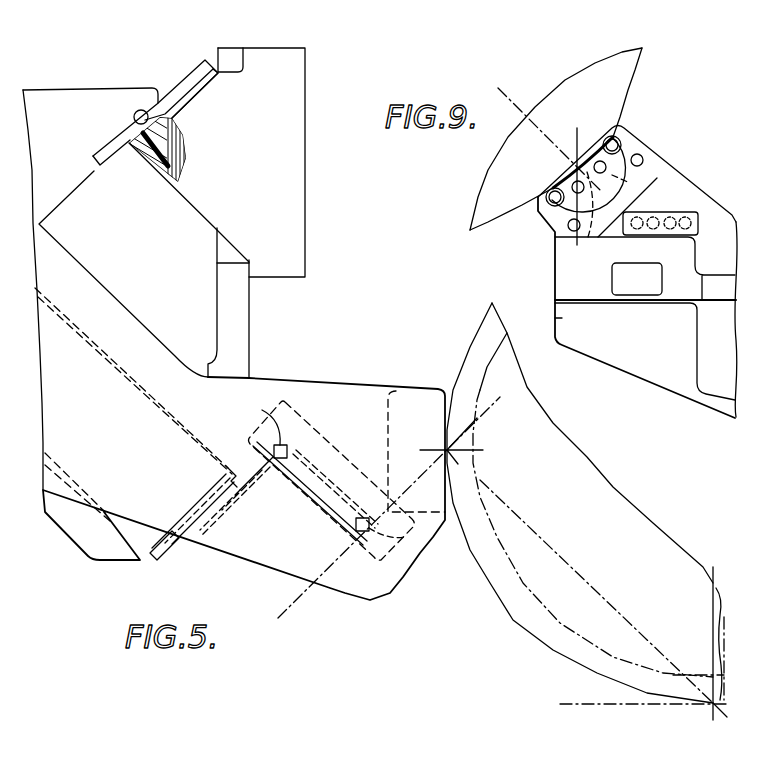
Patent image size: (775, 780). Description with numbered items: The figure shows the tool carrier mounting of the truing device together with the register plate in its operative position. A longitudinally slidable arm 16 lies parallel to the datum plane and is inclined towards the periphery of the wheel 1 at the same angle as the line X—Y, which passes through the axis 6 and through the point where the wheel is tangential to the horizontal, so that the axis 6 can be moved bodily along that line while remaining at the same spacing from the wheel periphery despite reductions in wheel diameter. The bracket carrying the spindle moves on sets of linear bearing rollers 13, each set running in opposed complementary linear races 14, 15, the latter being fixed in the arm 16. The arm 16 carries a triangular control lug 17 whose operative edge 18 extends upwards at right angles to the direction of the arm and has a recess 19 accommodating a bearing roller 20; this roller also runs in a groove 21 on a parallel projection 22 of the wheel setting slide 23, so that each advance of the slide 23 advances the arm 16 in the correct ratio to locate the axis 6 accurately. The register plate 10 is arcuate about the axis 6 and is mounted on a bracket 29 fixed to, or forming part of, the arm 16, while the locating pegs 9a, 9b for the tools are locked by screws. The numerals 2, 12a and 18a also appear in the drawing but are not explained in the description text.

In FIG. 5, the wheel 1 is at (500, 609).
In FIG. 9, the wheel 1 is at (628, 78).
In FIG. 5, the blade cutting edge 2 is at (493, 575).
In FIG. 5, the axis 6 is at (447, 450).
In FIG. 9, the axis 6 is at (575, 167).
In FIG. 9, the locating peg 9a is at (548, 196).
In FIG. 9, the locating peg 9b is at (610, 138).
In FIG. 9, the register plate 10 is at (622, 153).
In FIG. 5, the slider 12a is at (317, 427).
In FIG. 5, the linear bearing rollers 13 is at (274, 451).
In FIG. 5, the linear race 14 is at (262, 410).
In FIG. 5, the linear race 15 is at (288, 456).
In FIG. 5, the arm 16 is at (265, 568).
In FIG. 9, the arm 16 is at (556, 318).
In FIG. 5, the control lug 17 is at (95, 98).
In FIG. 5, the operative edge 18 is at (82, 182).
In FIG. 5, the guide slot 18a is at (183, 427).
In FIG. 5, the recess 19 is at (103, 148).
In FIG. 5, the bearing roller 20 is at (135, 116).
In FIG. 5, the groove 21 is at (152, 112).
In FIG. 5, the parallel projection 22 is at (203, 202).
In FIG. 5, the wheel setting slide 23 is at (218, 52).
In FIG. 5, the bracket 29 is at (388, 417).
In FIG. 9, the bracket 29 is at (625, 188).